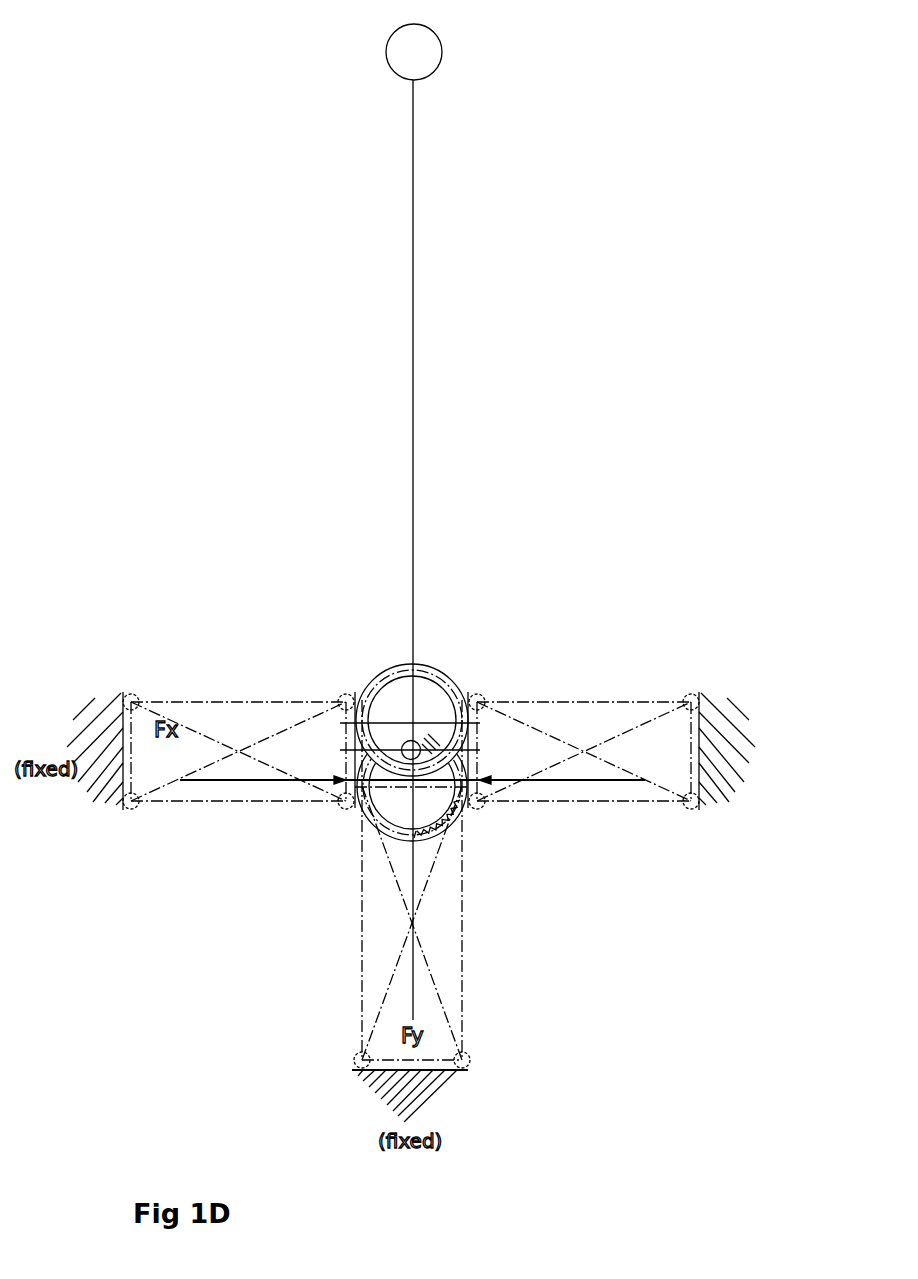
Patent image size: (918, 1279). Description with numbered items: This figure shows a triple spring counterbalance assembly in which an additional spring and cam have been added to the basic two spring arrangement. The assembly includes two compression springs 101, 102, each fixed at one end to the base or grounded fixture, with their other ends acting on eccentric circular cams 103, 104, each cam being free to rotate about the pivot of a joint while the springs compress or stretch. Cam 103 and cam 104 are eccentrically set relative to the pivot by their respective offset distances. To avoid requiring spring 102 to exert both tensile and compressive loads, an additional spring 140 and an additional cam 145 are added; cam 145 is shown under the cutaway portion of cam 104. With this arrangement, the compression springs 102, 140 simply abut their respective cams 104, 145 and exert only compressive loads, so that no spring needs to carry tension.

The compression spring 101 is at (493, 911).
The compression spring 102 is at (210, 768).
The eccentric circular cam 103 is at (478, 705).
The eccentric circular cam 104 is at (323, 806).
The additional spring 140 is at (664, 769).
The additional cam 145 is at (487, 836).